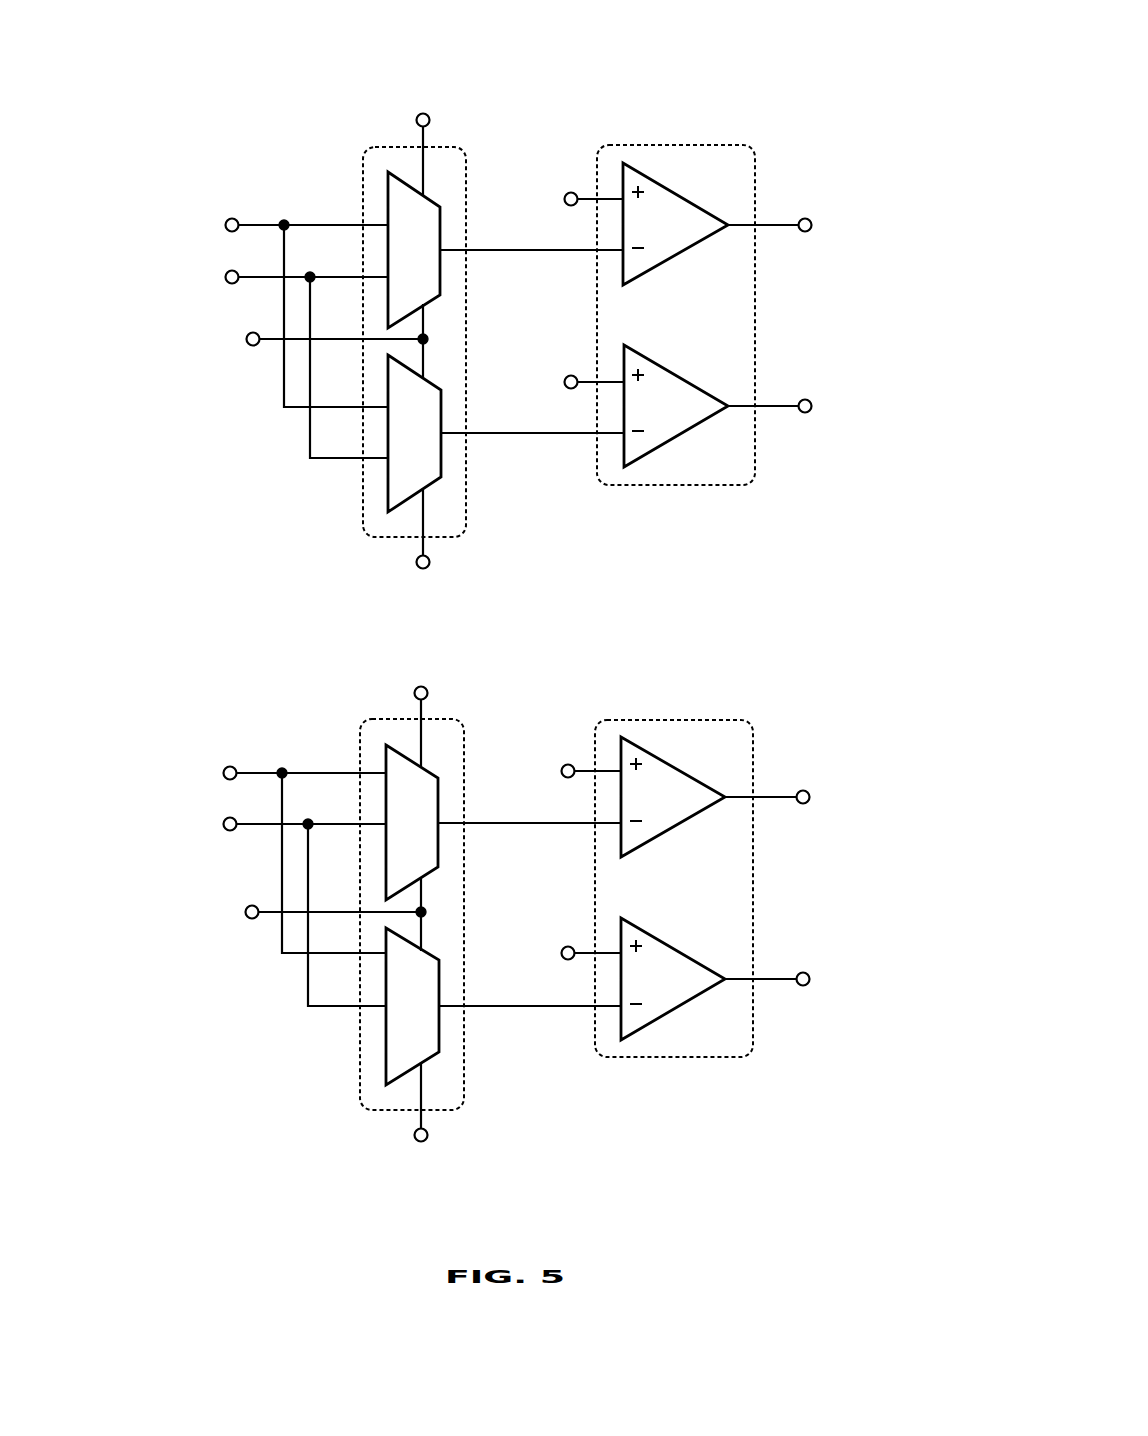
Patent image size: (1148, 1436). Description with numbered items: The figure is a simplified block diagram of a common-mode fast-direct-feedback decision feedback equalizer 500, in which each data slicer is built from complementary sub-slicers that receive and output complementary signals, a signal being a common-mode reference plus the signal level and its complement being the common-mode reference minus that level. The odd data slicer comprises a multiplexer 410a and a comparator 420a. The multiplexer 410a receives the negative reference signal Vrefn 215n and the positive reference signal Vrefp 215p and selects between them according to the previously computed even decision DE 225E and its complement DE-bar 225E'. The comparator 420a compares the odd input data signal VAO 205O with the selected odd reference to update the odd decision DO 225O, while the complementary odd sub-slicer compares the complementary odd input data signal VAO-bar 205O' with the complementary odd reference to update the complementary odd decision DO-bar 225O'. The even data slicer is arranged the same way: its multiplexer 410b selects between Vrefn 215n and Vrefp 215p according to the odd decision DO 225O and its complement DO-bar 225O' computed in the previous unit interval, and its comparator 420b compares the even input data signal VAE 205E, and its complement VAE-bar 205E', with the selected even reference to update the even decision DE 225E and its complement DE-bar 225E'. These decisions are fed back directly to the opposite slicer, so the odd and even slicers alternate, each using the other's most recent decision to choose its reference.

The common-mode fast-direct-feedback DFE (FDF-DFE) 500 is at (730, 46).
The multiplexer of the odd data slicer 410a is at (363, 172).
The comparator of the odd data slicer 420a is at (756, 172).
The multiplexer of the even data slicer 410b is at (360, 745).
The comparator of the even data slicer 420b is at (754, 745).
The negative reference signal (Vrefn) 215n is at (196, 235).
The positive reference signal (Vrefp) 215p is at (196, 286).
The even decision feedback signal (DE) 225E is at (641, 450).
The complementary even decision feedback signal (DE-bar) 225E' is at (508, 667).
The odd input data signal (VAO) 205O is at (562, 198).
The complementary odd input data signal (VAO-bar) 205O' is at (560, 378).
The odd decision feedback signal (DO) 225O is at (642, 687).
The complementary odd decision feedback signal (DO-bar) 225O' is at (508, 649).
The even input data signal (VAE) 205E is at (561, 772).
The complementary even input data signal (VAE-bar) 205E' is at (559, 950).